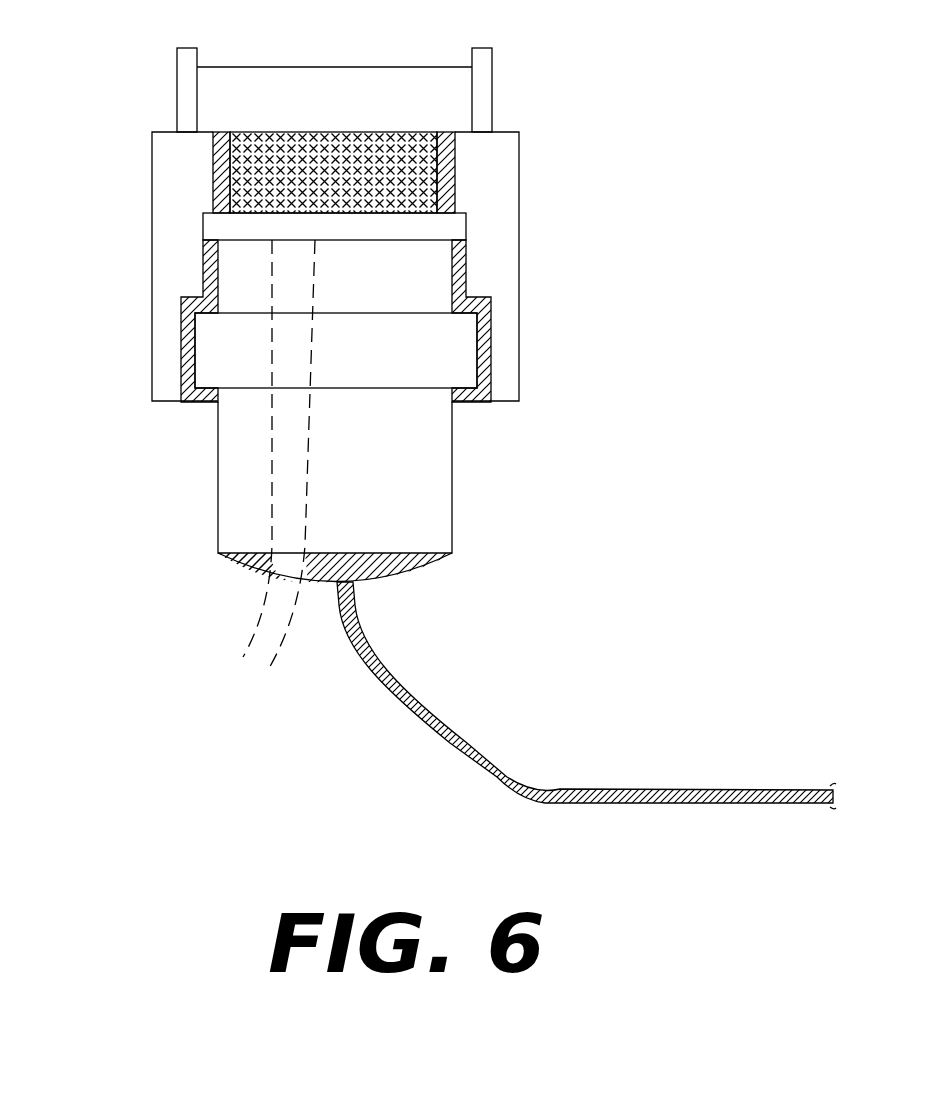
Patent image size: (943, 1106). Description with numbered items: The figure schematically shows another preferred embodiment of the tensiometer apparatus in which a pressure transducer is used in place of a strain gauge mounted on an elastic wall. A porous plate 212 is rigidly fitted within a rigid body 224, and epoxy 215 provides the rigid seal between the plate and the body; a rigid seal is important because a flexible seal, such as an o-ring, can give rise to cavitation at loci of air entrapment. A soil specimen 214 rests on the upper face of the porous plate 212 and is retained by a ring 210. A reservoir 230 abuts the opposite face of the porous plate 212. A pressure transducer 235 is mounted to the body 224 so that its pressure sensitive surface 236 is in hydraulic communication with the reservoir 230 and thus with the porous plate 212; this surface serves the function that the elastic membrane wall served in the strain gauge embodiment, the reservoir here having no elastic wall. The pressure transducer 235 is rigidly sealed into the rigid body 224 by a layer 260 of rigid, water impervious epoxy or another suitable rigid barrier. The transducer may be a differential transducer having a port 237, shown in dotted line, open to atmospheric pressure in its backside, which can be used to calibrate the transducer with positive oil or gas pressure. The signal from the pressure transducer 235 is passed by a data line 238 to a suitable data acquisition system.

The ring 210 is at (177, 99).
The porous plate 212 is at (328, 120).
The soil specimen 214 is at (297, 70).
The epoxy 215 is at (455, 157).
The rigid body 224 is at (172, 192).
The reservoir 230 is at (230, 230).
The pressure transducer 235 is at (207, 458).
The pressure sensitive surface 236 is at (443, 235).
The port 237 is at (246, 665).
The data line 238 is at (538, 814).
The layer of rigid epoxy 260 is at (505, 355).